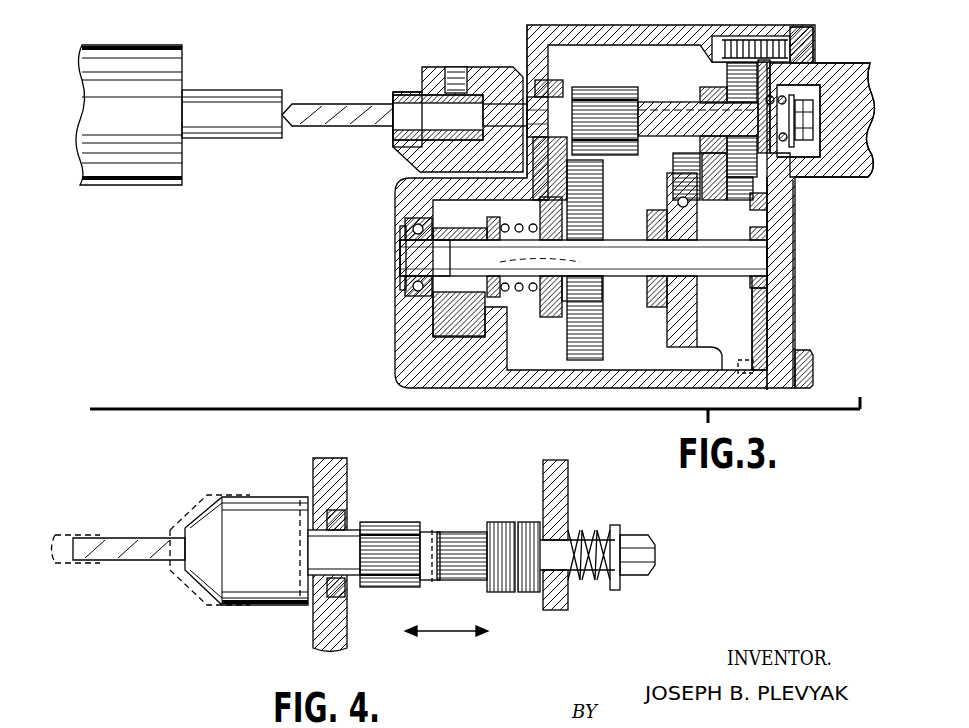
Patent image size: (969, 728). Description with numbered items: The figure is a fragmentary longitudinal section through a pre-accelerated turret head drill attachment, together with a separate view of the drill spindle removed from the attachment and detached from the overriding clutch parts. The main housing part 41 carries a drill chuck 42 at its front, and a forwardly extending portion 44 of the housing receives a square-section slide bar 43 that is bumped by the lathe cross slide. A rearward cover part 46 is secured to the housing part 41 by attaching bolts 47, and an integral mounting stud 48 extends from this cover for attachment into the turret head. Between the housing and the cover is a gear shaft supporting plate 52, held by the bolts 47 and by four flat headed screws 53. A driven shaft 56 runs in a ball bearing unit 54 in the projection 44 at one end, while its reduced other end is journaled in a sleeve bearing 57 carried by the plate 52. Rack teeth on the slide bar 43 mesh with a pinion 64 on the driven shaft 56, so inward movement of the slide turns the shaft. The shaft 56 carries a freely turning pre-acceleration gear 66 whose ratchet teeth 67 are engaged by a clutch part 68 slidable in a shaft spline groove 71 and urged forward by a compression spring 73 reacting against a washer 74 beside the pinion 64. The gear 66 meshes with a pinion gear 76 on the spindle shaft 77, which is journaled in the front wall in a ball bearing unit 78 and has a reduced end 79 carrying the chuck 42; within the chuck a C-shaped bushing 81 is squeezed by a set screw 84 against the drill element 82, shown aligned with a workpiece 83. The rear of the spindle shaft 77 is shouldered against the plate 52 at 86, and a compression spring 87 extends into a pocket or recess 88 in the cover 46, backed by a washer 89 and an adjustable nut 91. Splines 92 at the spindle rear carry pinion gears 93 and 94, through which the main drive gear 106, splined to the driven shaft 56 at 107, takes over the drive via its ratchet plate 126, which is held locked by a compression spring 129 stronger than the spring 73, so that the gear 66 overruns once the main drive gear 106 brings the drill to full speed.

In FIG. 3, the main housing part 41 is at (610, 100).
In FIG. 4, the main housing part 41 is at (325, 468).
In FIG. 3, the drill chuck 42 is at (485, 100).
In FIG. 4, the drill chuck 42 is at (252, 515).
In FIG. 3, the slide bar 43 is at (445, 318).
In FIG. 3, the forwardly extending portion 44 is at (405, 192).
In FIG. 3, the rearward cover part 46 is at (790, 332).
In FIG. 3, the attaching bolts 47 is at (790, 48).
In FIG. 3, the integral mounting stud 48 is at (830, 150).
In FIG. 3, the gear shaft supporting plate 52 is at (782, 312).
In FIG. 4, the gear shaft supporting plate 52 is at (556, 510).
In FIG. 3, the flat headed screws 53 is at (760, 365).
In FIG. 3, the ball bearing unit 54 is at (402, 288).
In FIG. 3, the driven shaft 56 is at (600, 265).
In FIG. 3, the sleeve bearing 57 is at (770, 280).
In FIG. 3, the pinion 64 is at (412, 222).
In FIG. 3, the pre-acceleration gear 66 is at (652, 330).
In FIG. 3, the ratchet teeth 67 is at (565, 318).
In FIG. 3, the clutch part 68 is at (545, 300).
In FIG. 3, the shaft spline groove 71 is at (402, 258).
In FIG. 3, the compression spring 73 is at (510, 224).
In FIG. 3, the washer 74 is at (482, 225).
In FIG. 3, the pinion gear 76 is at (600, 88).
In FIG. 4, the pinion gear 76 is at (395, 528).
In FIG. 3, the spindle shaft 77 is at (665, 102).
In FIG. 4, the spindle shaft 77 is at (432, 545).
In FIG. 3, the ball bearing unit 78 is at (552, 137).
In FIG. 4, the ball bearing unit 78 is at (346, 515).
In FIG. 3, the reduced end 79 is at (545, 80).
In FIG. 3, the bushing 81 is at (425, 92).
In FIG. 3, the drill element 82 is at (330, 127).
In FIG. 4, the drill element 82 is at (122, 538).
In FIG. 3, the workpiece 83 is at (222, 138).
In FIG. 3, the set screw 84 is at (452, 67).
In FIG. 3, the shoulder 86 is at (772, 153).
In FIG. 3, the compression spring 87 is at (790, 60).
In FIG. 4, the compression spring 87 is at (600, 530).
In FIG. 3, the pocket or recess 88 is at (835, 85).
In FIG. 3, the washer 89 is at (792, 147).
In FIG. 4, the washer 89 is at (616, 592).
In FIG. 3, the adjustable nut 91 is at (810, 140).
In FIG. 4, the adjustable nut 91 is at (658, 556).
In FIG. 3, the splines 92 is at (735, 63).
In FIG. 4, the splines 92 is at (468, 540).
In FIG. 4, the pinion gear 93 is at (498, 592).
In FIG. 4, the pinion gear 94 is at (530, 592).
In FIG. 3, the main drive gear 106 is at (721, 353).
In FIG. 3, the spline connection 107 is at (617, 290).
In FIG. 3, the ratchet plate 126 is at (660, 345).
In FIG. 3, the compression spring 129 is at (653, 206).